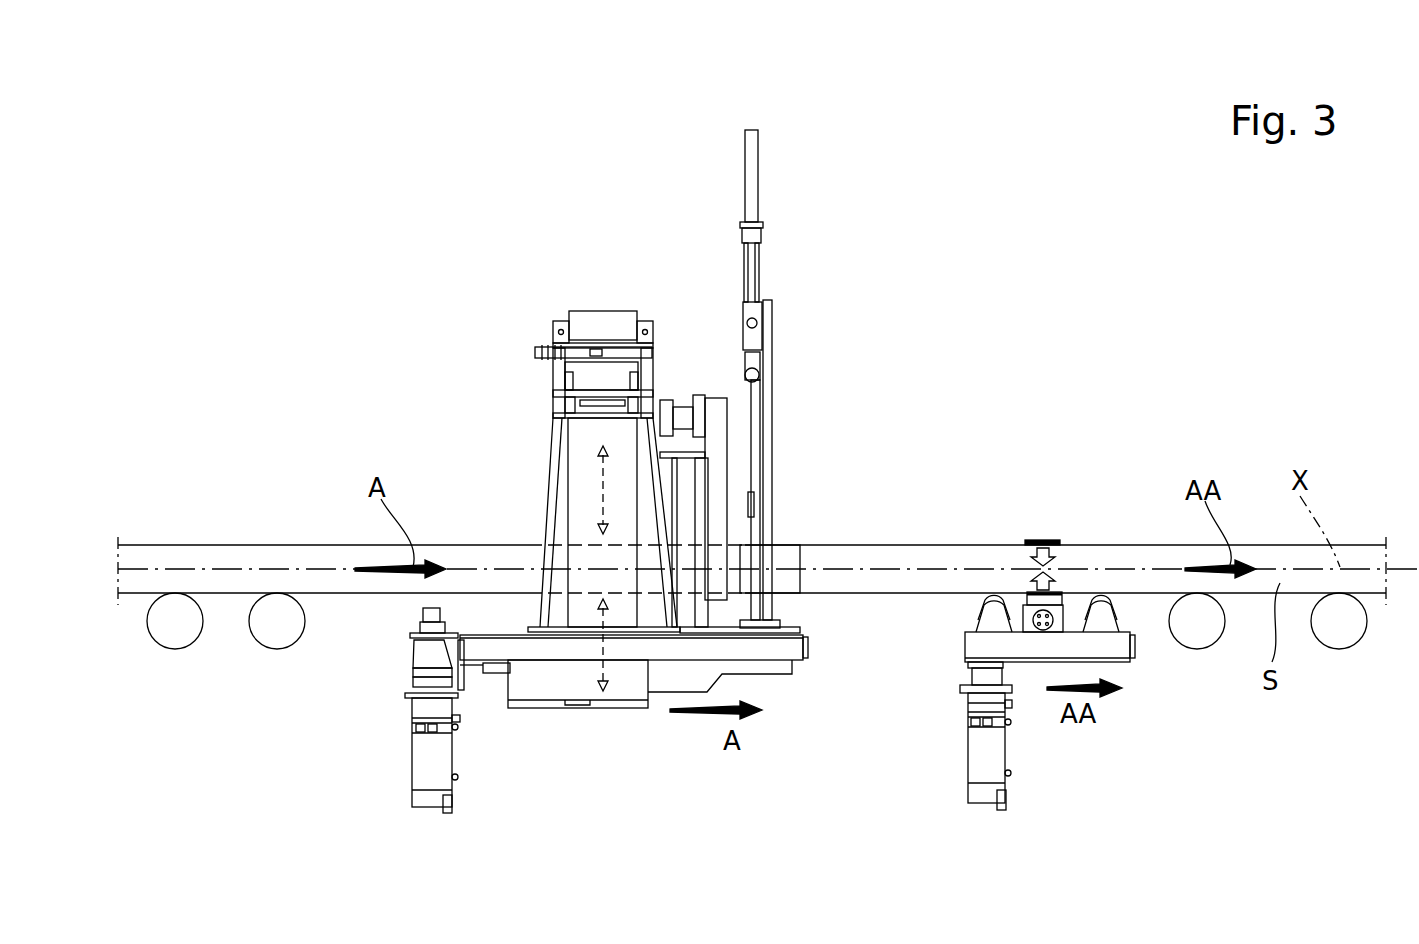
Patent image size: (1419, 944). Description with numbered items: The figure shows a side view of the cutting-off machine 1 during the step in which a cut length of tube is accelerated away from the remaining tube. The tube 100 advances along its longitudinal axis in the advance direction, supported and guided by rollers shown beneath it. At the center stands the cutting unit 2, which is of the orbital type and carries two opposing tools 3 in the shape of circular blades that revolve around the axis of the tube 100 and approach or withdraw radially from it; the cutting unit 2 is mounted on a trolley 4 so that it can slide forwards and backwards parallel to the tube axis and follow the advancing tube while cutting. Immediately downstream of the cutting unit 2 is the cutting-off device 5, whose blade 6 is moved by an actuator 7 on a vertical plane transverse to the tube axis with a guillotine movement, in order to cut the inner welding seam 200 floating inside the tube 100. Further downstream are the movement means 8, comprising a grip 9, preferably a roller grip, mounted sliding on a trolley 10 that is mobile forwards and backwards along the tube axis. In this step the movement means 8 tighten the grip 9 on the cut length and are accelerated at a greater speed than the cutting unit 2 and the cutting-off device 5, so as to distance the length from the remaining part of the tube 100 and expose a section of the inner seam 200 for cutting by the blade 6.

The cutting-off machine 1 is at (915, 285).
The cutting unit 2 is at (594, 295).
The tools 3 is at (578, 616).
The trolley 4 is at (483, 652).
The cutting-off device 5 is at (761, 362).
The blade 6 is at (770, 527).
The actuator 7 is at (752, 183).
The movement means 8 is at (1023, 645).
The grip 9 is at (1043, 540).
The trolley 10 is at (1113, 651).
The tube 100 is at (195, 555).
The inner welding seam 200 is at (745, 586).